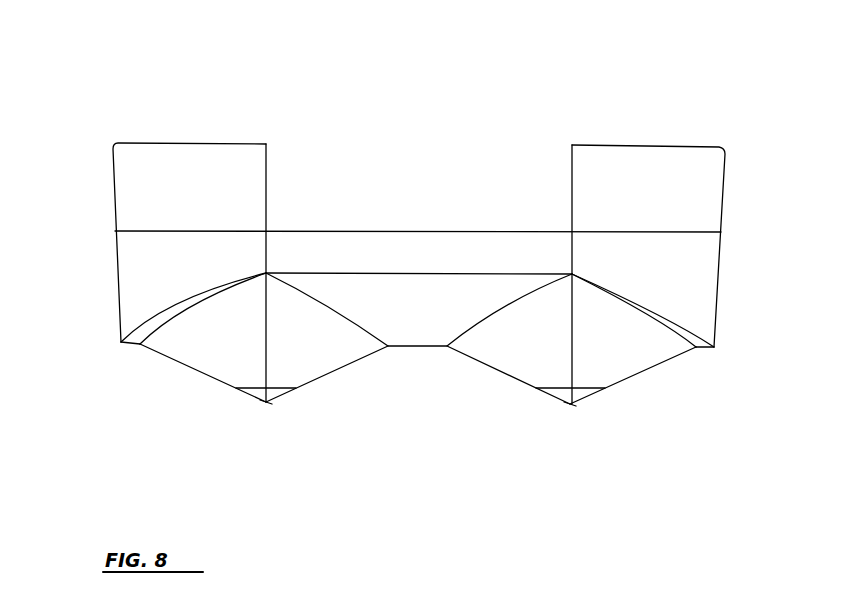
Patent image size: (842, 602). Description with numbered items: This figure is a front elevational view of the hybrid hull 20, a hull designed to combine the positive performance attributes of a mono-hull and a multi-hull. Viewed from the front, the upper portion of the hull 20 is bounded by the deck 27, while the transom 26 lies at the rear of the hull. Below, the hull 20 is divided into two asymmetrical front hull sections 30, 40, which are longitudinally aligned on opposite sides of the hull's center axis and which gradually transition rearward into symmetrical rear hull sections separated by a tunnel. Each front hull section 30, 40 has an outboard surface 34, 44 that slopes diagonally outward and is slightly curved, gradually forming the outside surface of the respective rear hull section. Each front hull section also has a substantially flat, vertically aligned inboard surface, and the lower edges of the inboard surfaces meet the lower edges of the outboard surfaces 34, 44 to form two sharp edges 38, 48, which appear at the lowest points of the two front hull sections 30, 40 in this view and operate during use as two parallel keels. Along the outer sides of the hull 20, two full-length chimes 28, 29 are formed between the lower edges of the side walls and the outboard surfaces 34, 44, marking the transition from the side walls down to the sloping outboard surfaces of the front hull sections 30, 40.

The hull 20 is at (112, 80).
The transom 26 is at (118, 262).
The deck 27 is at (722, 248).
The chime 28 is at (138, 346).
The chime 29 is at (708, 352).
The front hull section 30 is at (248, 410).
The outboard surface 34 is at (192, 368).
The sharp edge 38 is at (268, 405).
The front hull section 40 is at (572, 412).
The outboard surface 44 is at (657, 367).
The sharp edge 48 is at (568, 406).